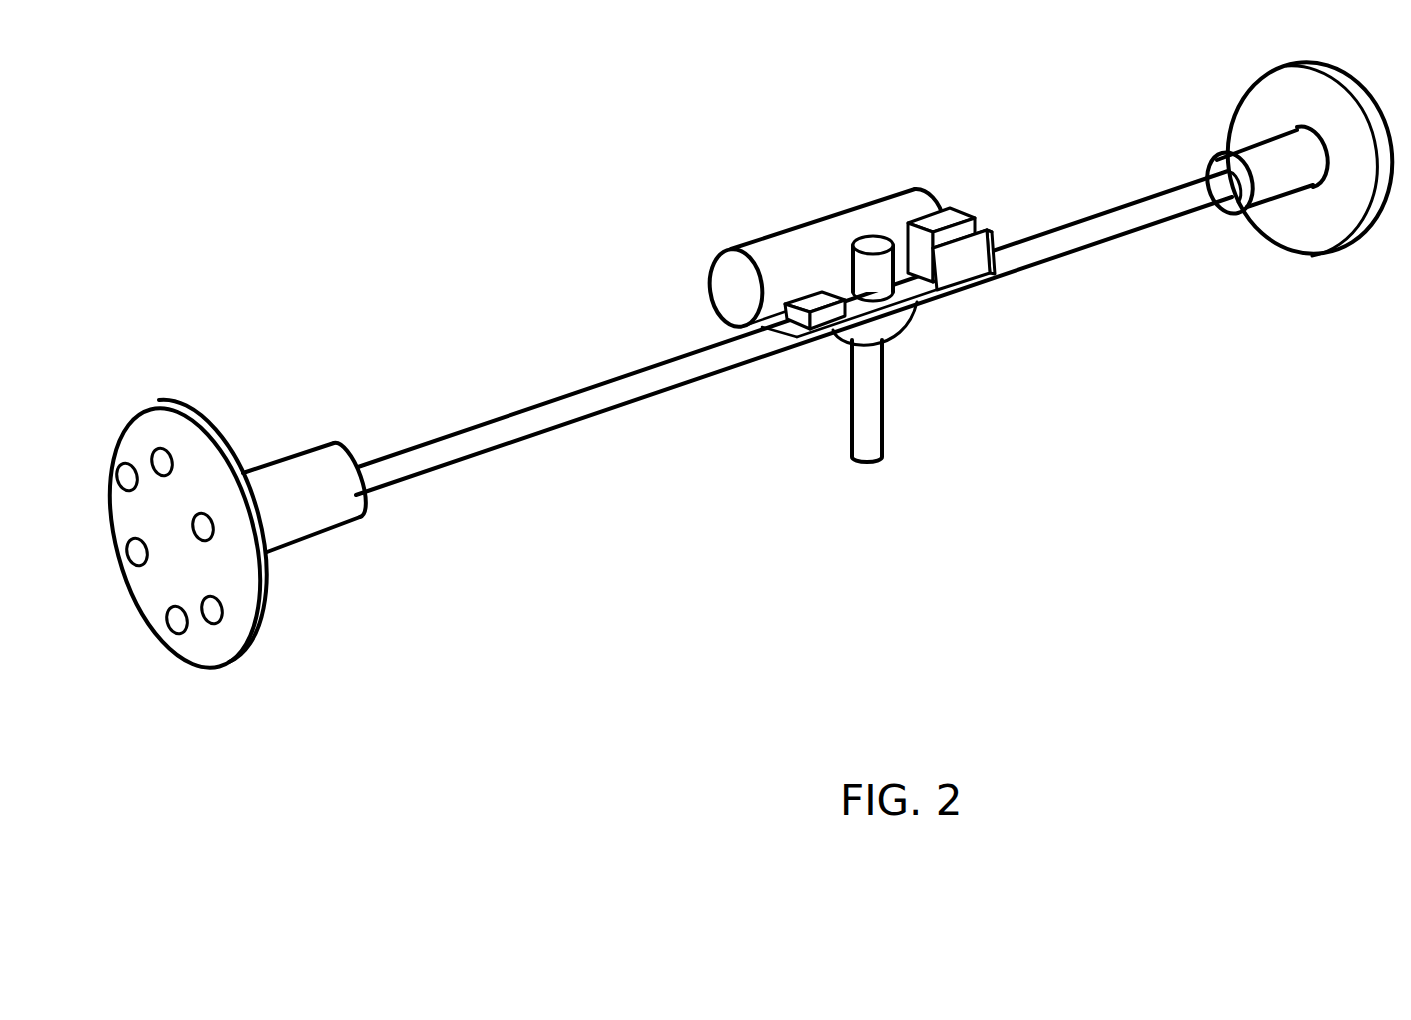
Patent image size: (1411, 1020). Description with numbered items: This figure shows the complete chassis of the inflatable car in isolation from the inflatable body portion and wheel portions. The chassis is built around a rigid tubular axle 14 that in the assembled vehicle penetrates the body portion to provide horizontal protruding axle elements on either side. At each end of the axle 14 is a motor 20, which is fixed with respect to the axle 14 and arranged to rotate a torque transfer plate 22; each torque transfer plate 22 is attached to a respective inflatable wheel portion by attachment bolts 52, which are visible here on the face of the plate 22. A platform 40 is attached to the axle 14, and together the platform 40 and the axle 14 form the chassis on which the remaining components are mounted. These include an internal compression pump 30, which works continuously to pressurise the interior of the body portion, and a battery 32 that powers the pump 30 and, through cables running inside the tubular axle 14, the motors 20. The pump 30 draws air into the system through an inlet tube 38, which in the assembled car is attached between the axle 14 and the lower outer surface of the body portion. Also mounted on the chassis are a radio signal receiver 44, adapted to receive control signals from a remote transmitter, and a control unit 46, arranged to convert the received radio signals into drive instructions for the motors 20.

The axle 14 is at (588, 408).
The motor 20 is at (322, 517).
The torque transfer plate 22 is at (253, 653).
The compression pump 30 is at (913, 303).
The battery 32 is at (842, 233).
The inlet tube 38 is at (873, 423).
The platform 40 is at (863, 313).
The radio signal receiver 44 is at (797, 337).
The control unit 46 is at (993, 234).
The attachment bolts 52 is at (202, 615).